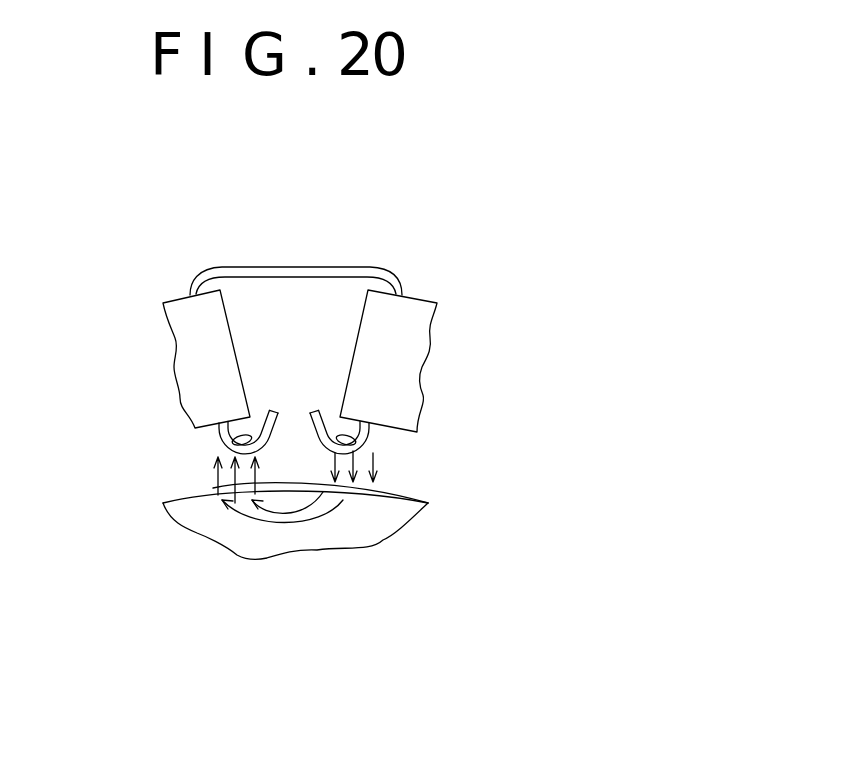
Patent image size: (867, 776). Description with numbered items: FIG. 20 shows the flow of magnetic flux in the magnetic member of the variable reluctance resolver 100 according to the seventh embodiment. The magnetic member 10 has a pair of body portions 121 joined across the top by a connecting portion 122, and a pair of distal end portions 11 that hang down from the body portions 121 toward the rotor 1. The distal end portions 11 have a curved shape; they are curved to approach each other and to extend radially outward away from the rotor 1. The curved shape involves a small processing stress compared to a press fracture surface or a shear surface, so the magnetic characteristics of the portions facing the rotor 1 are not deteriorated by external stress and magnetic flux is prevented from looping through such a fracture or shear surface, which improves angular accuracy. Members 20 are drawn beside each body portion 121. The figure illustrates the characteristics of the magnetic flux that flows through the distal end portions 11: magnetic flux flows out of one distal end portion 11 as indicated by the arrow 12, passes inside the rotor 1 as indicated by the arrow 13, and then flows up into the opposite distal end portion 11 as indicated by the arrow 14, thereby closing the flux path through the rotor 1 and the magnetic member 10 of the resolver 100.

The variable reluctance resolver 100 is at (443, 222).
The clip 10 is at (303, 262).
The connecting portion of clip 122 is at (242, 266).
The body portions 121 is at (218, 443).
The distal end portions 11 is at (221, 450).
The heat generating component 20 is at (412, 363).
The arrow 12 is at (378, 455).
The arrow 14 is at (213, 488).
The rotor 1 is at (252, 556).
The arrow 13 is at (293, 529).